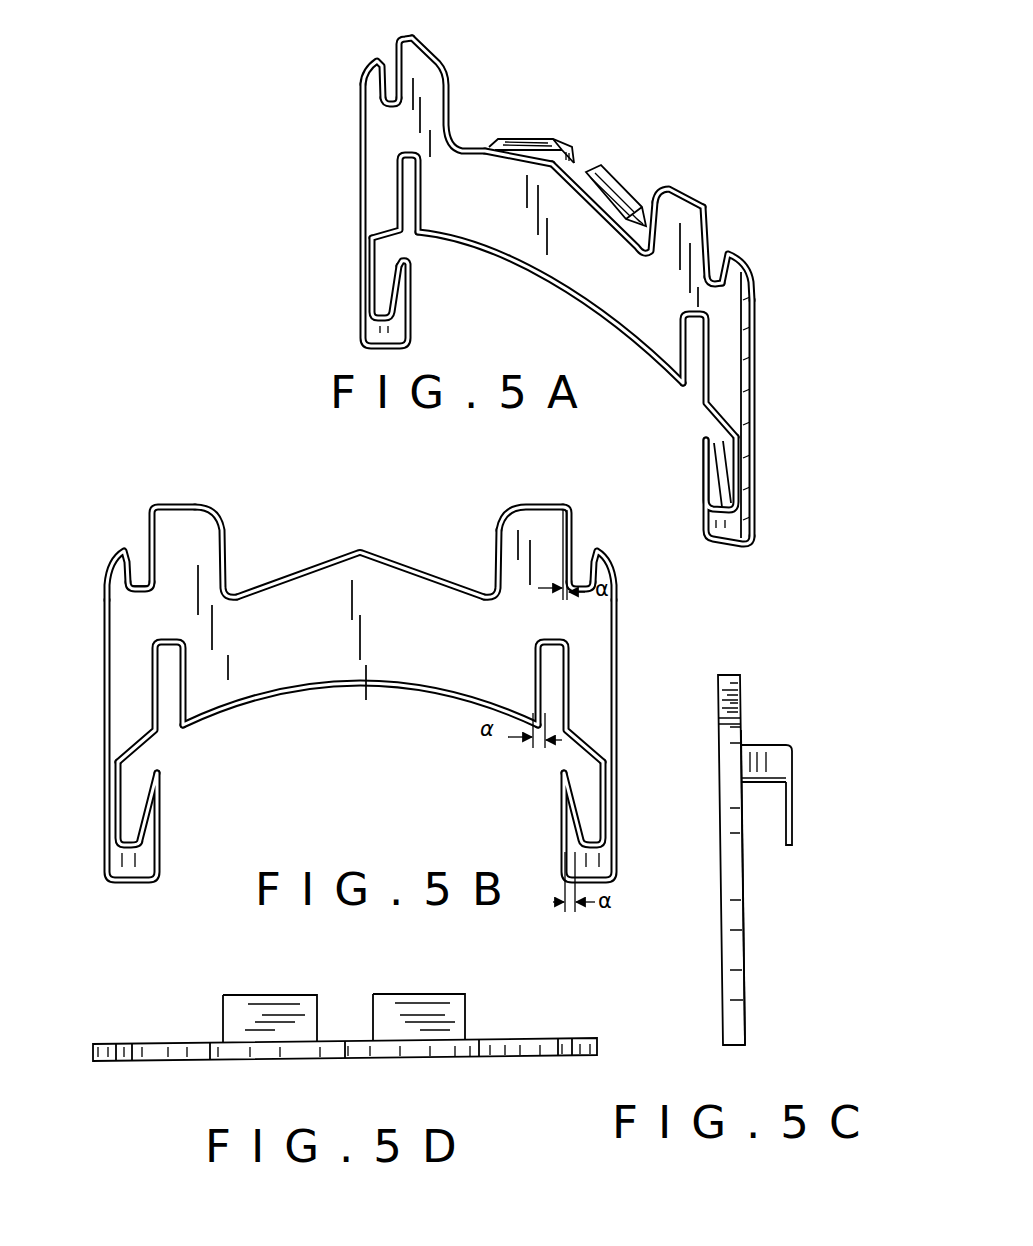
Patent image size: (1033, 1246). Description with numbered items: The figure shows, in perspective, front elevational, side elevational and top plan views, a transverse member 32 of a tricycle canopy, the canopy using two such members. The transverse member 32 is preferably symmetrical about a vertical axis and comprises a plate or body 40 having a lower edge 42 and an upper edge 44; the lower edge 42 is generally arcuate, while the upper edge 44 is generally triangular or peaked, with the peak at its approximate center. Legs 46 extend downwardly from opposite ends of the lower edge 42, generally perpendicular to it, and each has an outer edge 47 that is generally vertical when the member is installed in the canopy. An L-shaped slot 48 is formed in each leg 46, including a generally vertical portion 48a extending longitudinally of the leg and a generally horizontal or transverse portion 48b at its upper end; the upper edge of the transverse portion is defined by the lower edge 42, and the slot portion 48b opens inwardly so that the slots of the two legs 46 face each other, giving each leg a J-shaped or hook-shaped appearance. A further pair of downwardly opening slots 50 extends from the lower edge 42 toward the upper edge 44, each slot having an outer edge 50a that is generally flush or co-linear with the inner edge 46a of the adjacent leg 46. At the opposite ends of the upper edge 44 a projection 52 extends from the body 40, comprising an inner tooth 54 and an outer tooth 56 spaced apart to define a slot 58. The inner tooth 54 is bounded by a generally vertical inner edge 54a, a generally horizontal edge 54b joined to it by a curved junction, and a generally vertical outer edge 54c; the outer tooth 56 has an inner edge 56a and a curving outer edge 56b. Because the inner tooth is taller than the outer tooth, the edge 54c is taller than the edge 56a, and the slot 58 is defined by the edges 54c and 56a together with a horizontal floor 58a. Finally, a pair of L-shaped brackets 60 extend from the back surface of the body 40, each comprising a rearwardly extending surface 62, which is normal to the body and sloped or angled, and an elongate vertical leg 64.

In FIG. 5B, the transverse member 32 is at (359, 490).
In FIG. 5D, the transverse member 32 is at (328, 970).
In FIG. 5A, the plate or body 40 is at (596, 252).
In FIG. 5B, the plate or body 40 is at (433, 632).
In FIG. 5C, the plate or body 40 is at (731, 860).
In FIG. 5A, the lower edge 42 is at (607, 320).
In FIG. 5B, the lower edge 42 is at (385, 688).
In FIG. 5B, the upper edge 44 is at (375, 550).
In FIG. 5C, the upper edge 44 is at (729, 688).
In FIG. 5D, the upper edge 44 is at (333, 1062).
In FIG. 5A, the legs 46 is at (356, 299).
In FIG. 5B, the legs 46 is at (105, 815).
In FIG. 5B, the inner edge of the leg 46a is at (158, 846).
In FIG. 5A, the outer edge 47 is at (746, 408).
In FIG. 5C, the outer edge 47 is at (738, 988).
In FIG. 5A, the L-shaped slot 48 is at (381, 280).
In FIG. 5B, the L-shaped slot 48 is at (134, 807).
In FIG. 5B, the vertical portion 48a is at (602, 822).
In FIG. 5B, the horizontal or transverse portion 48b is at (575, 765).
In FIG. 5A, the downwardly opening slots 50 is at (404, 229).
In FIG. 5B, the downwardly opening slots 50 is at (178, 716).
In FIG. 5B, the outer edge 50a is at (163, 690).
In FIG. 5A, the projection 52 is at (427, 39).
In FIG. 5B, the projection 52 is at (166, 491).
In FIG. 5A, the inner tooth 54 is at (452, 64).
In FIG. 5B, the inner tooth 54 is at (219, 506).
In FIG. 5D, the inner tooth 54 is at (195, 1062).
In FIG. 5B, the inner edge 54a is at (496, 545).
In FIG. 5B, the horizontal edge 54b is at (530, 503).
In FIG. 5B, the outer edge 54c is at (566, 510).
In FIG. 5A, the outer tooth 56 is at (366, 73).
In FIG. 5B, the outer tooth 56 is at (106, 560).
In FIG. 5D, the outer tooth 56 is at (110, 1062).
In FIG. 5B, the inner edge of the outer tooth 56a is at (586, 556).
In FIG. 5B, the curving outer edge 56b is at (606, 557).
In FIG. 5A, the slot 58 is at (386, 95).
In FIG. 5B, the slot 58 is at (140, 560).
In FIG. 5D, the slot 58 is at (122, 1045).
In FIG. 5B, the horizontal floor 58a is at (131, 590).
In FIG. 5A, the L-shaped brackets 60 is at (617, 172).
In FIG. 5C, the L-shaped brackets 60 is at (797, 765).
In FIG. 5A, the rearwardly extending surface 62 is at (530, 141).
In FIG. 5C, the rearwardly extending surface 62 is at (768, 757).
In FIG. 5D, the rearwardly extending surface 62 is at (280, 1003).
In FIG. 5A, the elongate vertical leg 64 is at (573, 145).
In FIG. 5C, the elongate vertical leg 64 is at (792, 813).